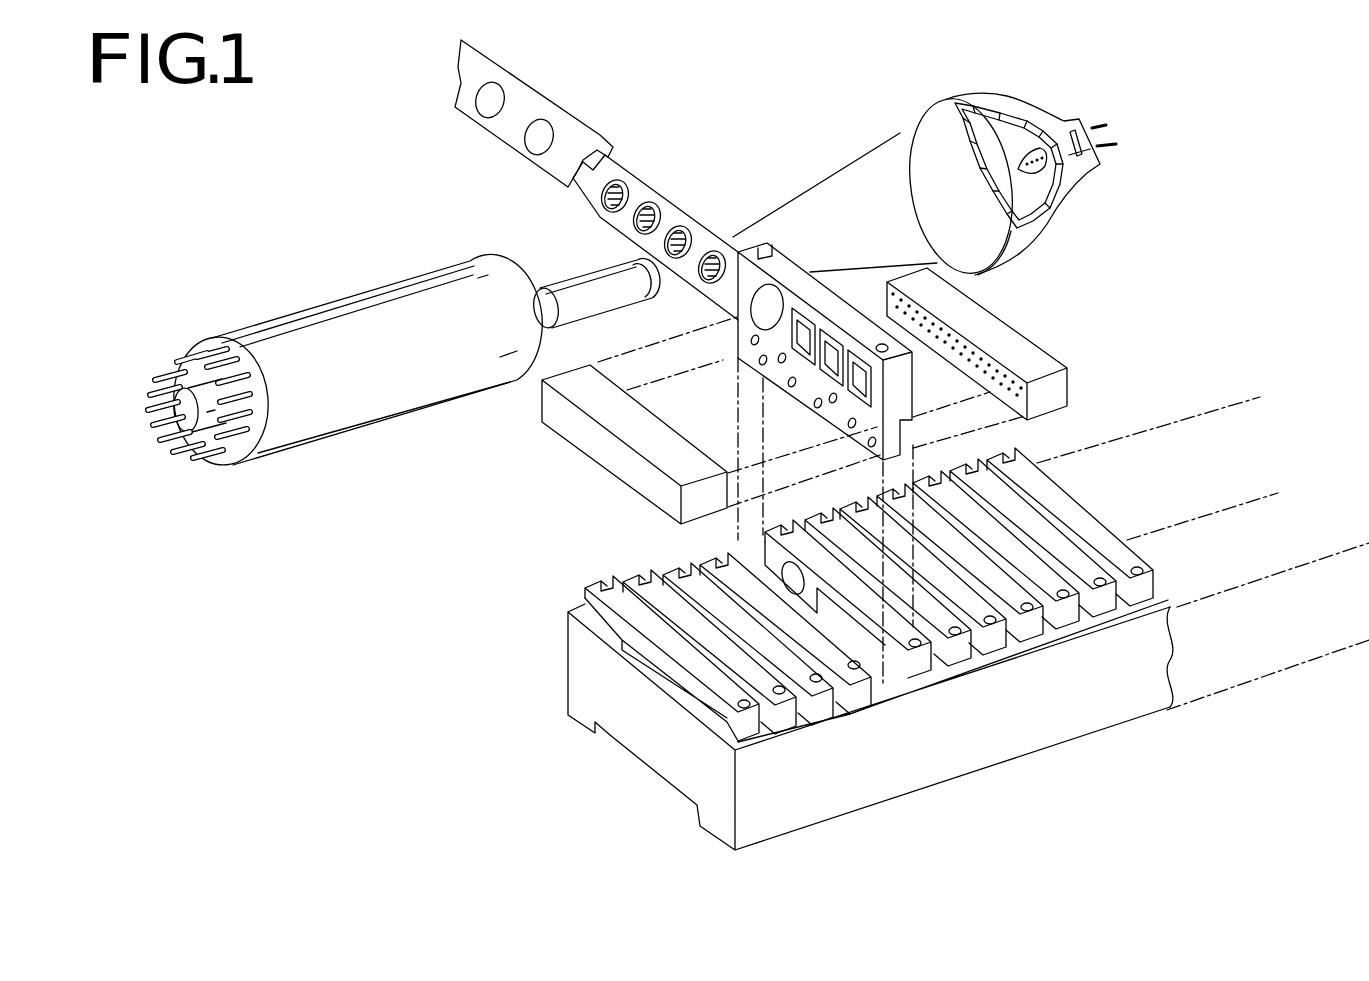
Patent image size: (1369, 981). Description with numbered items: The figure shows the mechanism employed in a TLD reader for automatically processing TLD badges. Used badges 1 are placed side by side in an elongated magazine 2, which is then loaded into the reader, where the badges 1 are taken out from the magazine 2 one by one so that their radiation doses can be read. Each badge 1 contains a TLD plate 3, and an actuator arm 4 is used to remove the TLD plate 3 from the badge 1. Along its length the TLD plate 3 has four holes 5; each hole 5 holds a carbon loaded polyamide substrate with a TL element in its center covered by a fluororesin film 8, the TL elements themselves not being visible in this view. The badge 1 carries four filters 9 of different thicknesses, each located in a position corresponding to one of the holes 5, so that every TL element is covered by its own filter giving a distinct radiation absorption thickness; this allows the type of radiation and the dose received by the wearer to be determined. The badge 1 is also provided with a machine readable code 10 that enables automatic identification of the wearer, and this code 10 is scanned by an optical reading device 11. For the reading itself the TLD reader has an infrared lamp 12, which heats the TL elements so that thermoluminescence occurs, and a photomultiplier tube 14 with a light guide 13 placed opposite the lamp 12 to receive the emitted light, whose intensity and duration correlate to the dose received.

The badge 1 is at (900, 390).
The magazine 2 is at (990, 728).
The TLD plate 3 is at (677, 207).
The actuator arm 4 is at (538, 90).
The holes 5 is at (668, 230).
The fluororesin film 8 is at (677, 246).
The filters 9 is at (855, 390).
The machine readable code 10 is at (869, 443).
The optical reading device 11 is at (600, 440).
The infrared lamp 12 is at (1009, 94).
The light guide 13 is at (563, 290).
The photomultiplier tube 14 is at (362, 421).